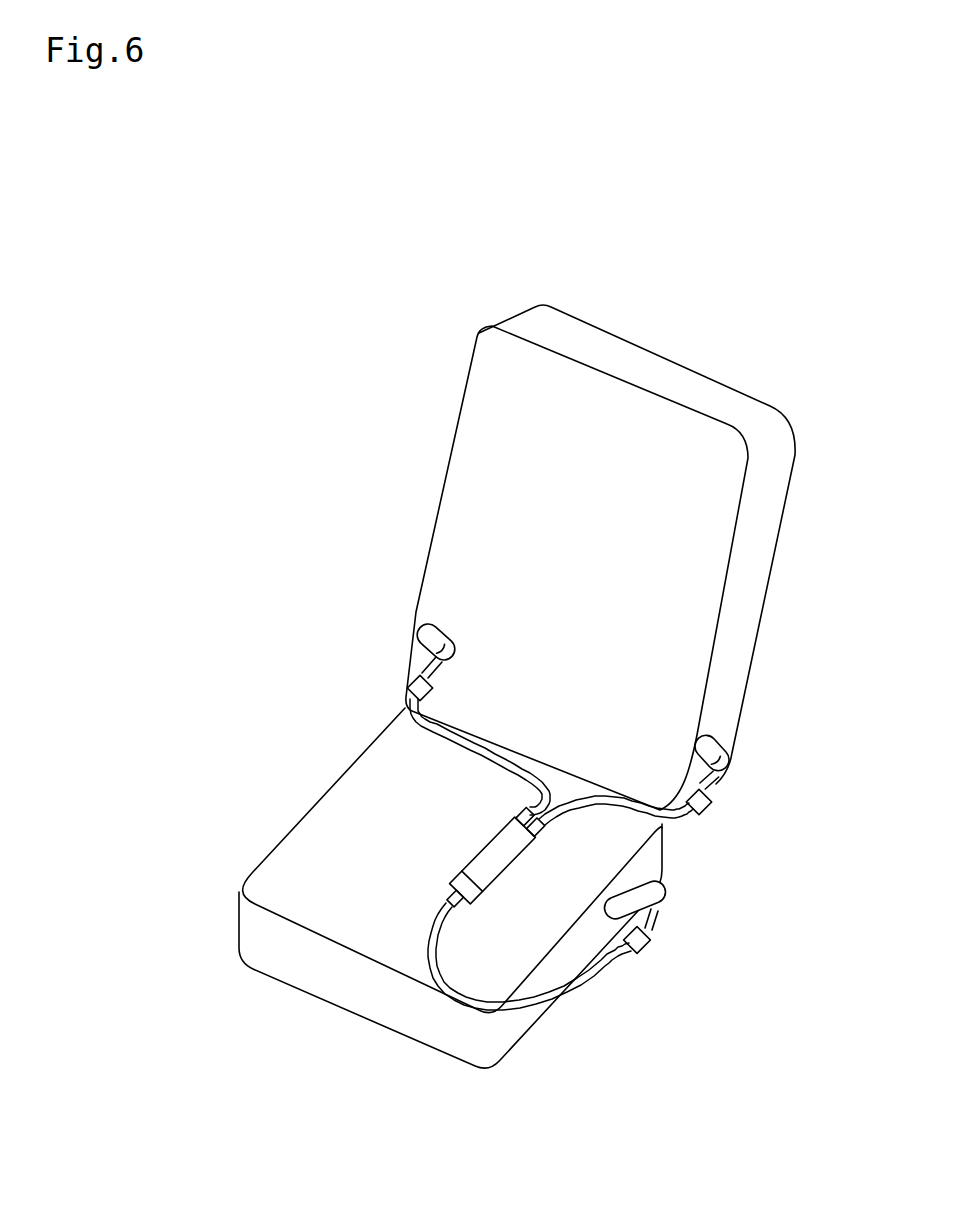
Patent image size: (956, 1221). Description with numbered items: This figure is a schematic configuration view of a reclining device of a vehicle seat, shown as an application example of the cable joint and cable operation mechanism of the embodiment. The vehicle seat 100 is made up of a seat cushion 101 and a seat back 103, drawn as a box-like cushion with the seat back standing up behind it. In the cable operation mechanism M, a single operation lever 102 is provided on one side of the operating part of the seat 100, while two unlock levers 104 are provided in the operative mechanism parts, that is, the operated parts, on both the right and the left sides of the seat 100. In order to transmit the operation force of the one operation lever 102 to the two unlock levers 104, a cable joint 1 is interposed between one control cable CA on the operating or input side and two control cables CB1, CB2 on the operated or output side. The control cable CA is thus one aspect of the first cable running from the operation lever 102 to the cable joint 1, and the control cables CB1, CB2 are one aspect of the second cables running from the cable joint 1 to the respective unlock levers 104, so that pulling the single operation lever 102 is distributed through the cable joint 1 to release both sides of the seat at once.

The vehicle seat 100 is at (791, 283).
The seat cushion 101 is at (323, 797).
The seat back 103 is at (680, 375).
The unlock lever 104 is at (427, 645).
The operation lever 102 is at (667, 887).
The cable joint 1 is at (483, 857).
The cable operation mechanism M is at (455, 863).
The control cable (second cable) CB1 is at (477, 748).
The control cable (second cable) CB2 is at (596, 806).
The control cable (first cable) CA is at (438, 918).